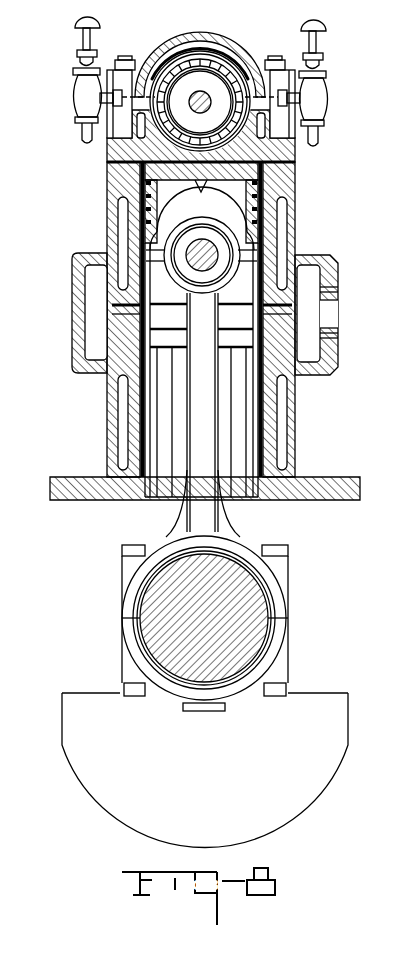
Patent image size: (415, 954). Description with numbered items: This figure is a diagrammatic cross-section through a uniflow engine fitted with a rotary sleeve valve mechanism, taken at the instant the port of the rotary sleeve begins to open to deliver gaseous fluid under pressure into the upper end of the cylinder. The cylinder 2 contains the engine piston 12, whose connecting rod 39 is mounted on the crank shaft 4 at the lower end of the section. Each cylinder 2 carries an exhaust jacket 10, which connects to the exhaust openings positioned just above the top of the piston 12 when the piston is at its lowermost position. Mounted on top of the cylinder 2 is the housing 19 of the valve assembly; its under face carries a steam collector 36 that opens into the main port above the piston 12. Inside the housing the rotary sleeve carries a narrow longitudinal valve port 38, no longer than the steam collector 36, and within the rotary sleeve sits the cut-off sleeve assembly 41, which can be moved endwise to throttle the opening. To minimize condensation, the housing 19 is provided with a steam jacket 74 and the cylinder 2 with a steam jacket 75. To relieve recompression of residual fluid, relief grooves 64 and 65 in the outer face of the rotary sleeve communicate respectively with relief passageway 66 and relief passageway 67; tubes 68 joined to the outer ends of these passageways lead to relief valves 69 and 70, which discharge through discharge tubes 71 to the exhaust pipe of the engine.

The cylinder 2 is at (103, 420).
The crank shaft 4 is at (160, 598).
The exhaust jacket 10 is at (90, 318).
The engine piston 12 is at (150, 233).
The housing 19 is at (218, 38).
The steam collector 36 is at (243, 143).
The longitudinal valve port 38 is at (170, 102).
The piston connecting rod 39 is at (225, 510).
The cut-off sleeve assembly 41 is at (214, 128).
The relief groove 64 is at (212, 33).
The relief groove 65 is at (107, 192).
The relief passageway 66 is at (297, 157).
The relief passageway 67 is at (107, 157).
The tube 68 is at (108, 70).
The relief valve 69 is at (75, 97).
The relief valve 70 is at (326, 97).
The discharge tube 71 is at (82, 134).
The steam jacket 74 is at (235, 56).
The steam jacket 75 is at (283, 233).